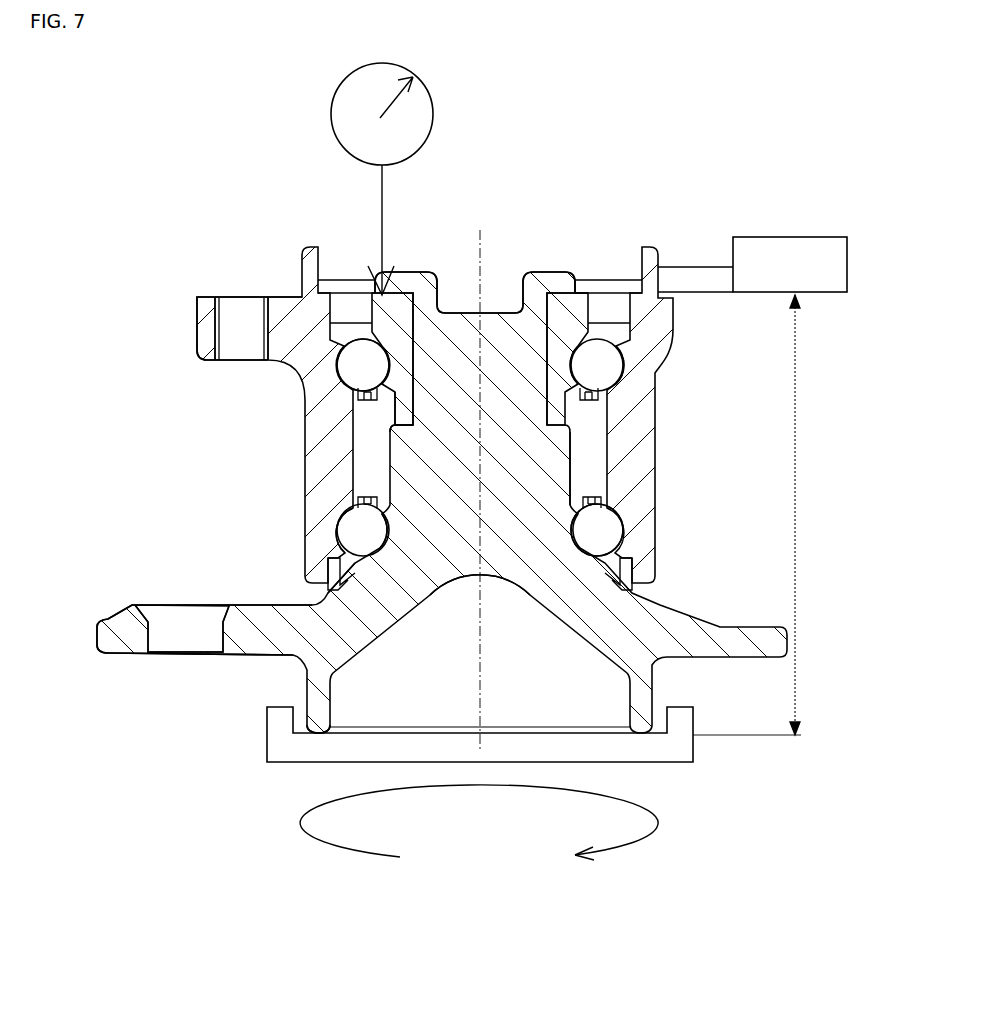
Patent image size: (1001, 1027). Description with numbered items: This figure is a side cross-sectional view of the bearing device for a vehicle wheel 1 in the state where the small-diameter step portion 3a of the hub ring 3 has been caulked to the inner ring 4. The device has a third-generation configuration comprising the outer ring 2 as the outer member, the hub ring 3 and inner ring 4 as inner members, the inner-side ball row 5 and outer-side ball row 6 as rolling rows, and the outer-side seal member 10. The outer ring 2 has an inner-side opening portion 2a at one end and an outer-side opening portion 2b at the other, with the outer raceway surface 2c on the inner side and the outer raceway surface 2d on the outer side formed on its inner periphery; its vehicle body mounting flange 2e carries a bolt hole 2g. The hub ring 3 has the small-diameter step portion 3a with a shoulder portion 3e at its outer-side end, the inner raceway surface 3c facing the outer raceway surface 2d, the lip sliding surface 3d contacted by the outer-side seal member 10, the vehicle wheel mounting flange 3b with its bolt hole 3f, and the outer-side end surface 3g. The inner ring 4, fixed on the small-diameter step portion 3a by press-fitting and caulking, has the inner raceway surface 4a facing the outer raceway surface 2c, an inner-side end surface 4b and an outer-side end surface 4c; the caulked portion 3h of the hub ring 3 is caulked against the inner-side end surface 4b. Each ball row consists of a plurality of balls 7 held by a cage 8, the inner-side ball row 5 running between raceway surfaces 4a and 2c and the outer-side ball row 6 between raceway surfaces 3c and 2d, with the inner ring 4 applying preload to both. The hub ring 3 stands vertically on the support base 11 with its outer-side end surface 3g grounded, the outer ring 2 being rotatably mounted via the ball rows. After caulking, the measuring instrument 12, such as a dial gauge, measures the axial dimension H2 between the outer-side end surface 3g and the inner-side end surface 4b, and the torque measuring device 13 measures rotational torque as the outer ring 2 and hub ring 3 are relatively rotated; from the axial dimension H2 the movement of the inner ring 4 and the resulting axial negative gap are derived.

The bearing device for a vehicle wheel 1 is at (266, 236).
The outer ring 2 is at (298, 470).
The inner-side opening portion 2a is at (562, 284).
The outer-side opening portion 2b is at (398, 593).
The outer raceway surface on the inner side 2c is at (617, 362).
The outer raceway surface on the outer side 2d is at (337, 526).
The vehicle body mounting flange 2e is at (200, 297).
The bolt hole 2g is at (262, 320).
The hub ring 3 is at (265, 688).
The small-diameter step portion 3a is at (574, 427).
The vehicle wheel mounting flange 3b is at (120, 656).
The inner raceway surface 3c is at (347, 521).
The lip sliding surface 3d is at (327, 568).
The shoulder portion 3e is at (402, 427).
The bolt hole 3f is at (150, 638).
The outer-side end surface 3g is at (322, 733).
The caulked portion 3h is at (396, 283).
The inner ring 4 is at (370, 292).
The inner raceway surface 4a is at (580, 390).
The inner-side end surface 4b is at (579, 292).
The outer-side end surface 4c is at (399, 458).
The inner-side ball row 5 is at (428, 373).
The outer-side ball row 6 is at (527, 530).
The ball 7 is at (338, 364).
The cage 8 is at (358, 380).
The outer-side seal member 10 is at (588, 592).
The support base 11 is at (640, 752).
The measuring instrument 12 is at (422, 76).
The torque measuring device 13 is at (786, 236).
The axial dimension H2 is at (760, 515).